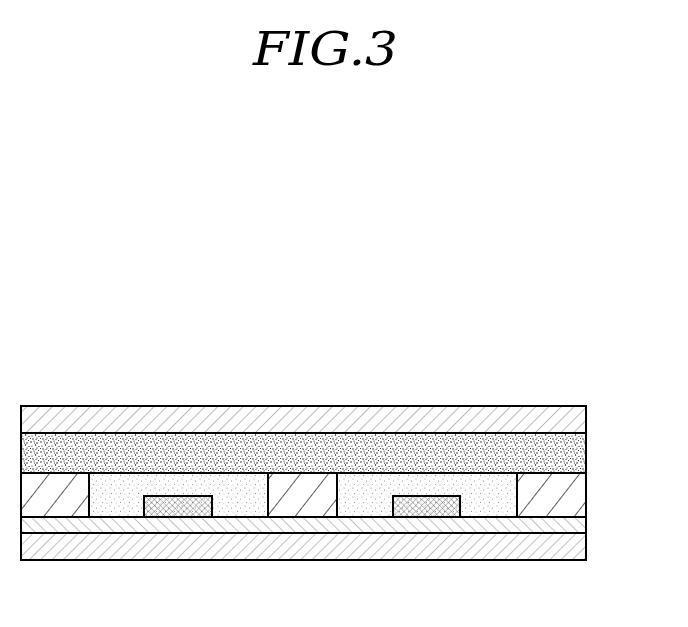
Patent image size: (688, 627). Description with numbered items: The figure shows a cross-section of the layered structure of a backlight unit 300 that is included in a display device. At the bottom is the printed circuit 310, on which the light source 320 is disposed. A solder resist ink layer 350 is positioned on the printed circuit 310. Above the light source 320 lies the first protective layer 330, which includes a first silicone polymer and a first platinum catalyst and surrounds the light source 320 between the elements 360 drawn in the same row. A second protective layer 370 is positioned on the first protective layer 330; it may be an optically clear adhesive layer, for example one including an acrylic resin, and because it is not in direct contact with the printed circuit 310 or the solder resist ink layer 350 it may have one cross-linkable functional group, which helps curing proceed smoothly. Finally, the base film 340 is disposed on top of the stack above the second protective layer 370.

The backlight unit 300 is at (69, 352).
The printed circuit 310 is at (577, 545).
The light source 320 is at (177, 512).
The first protective layer 330 is at (487, 512).
The base film 340 is at (577, 415).
The solder resist ink layer 350 is at (577, 523).
The pixel defining layer / bank 360 is at (577, 491).
The second protective layer 370 is at (577, 449).